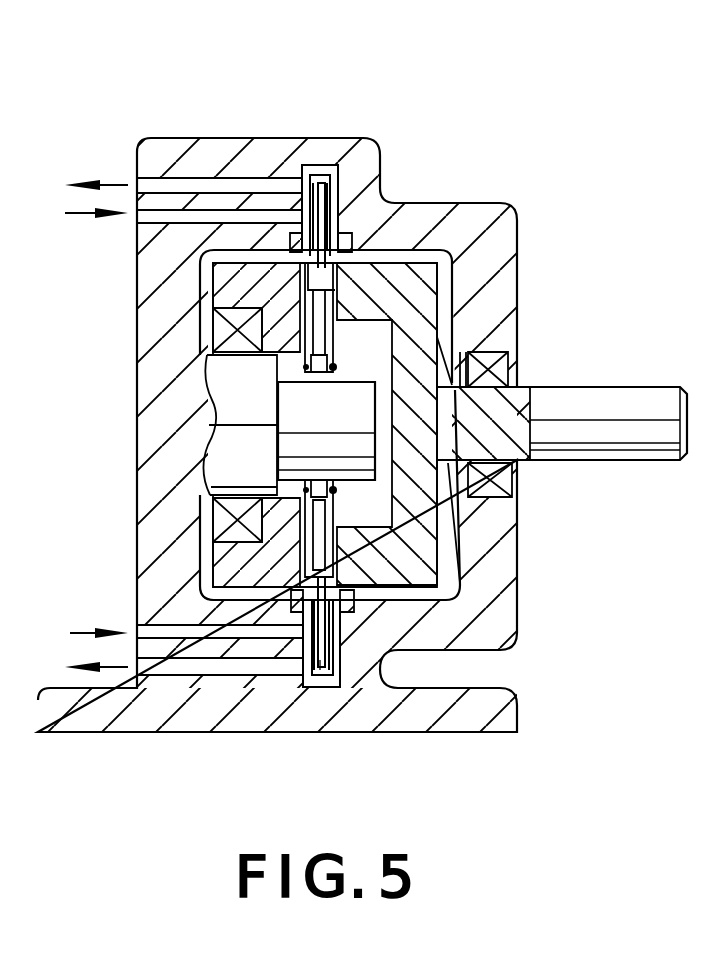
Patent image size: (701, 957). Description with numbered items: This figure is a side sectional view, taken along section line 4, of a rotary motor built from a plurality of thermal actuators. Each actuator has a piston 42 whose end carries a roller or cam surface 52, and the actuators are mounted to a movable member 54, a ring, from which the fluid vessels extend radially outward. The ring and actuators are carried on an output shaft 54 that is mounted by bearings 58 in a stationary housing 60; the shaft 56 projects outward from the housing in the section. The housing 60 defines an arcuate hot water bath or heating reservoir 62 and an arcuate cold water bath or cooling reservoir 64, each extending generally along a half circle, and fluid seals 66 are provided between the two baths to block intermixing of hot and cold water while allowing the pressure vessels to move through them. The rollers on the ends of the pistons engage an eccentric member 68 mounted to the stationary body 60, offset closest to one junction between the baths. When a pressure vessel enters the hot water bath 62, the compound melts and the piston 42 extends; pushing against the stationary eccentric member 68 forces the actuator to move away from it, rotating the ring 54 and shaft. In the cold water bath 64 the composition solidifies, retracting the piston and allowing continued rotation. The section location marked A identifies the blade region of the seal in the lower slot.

The section line 4- 4 is at (335, 792).
The piston 42 is at (318, 328).
The roller or cam surface 52 is at (319, 384).
The movable member (ring) / output shaft 54 is at (433, 543).
The shaft 56 is at (588, 406).
The bearings 58 is at (216, 522).
The stationary housing 60 is at (518, 600).
The hot water bath or heating reservoir 62 is at (303, 172).
The cold water bath or cooling reservoir 64 is at (300, 690).
The fluid seals 66 is at (295, 592).
The eccentric member 68 is at (224, 399).
The blade location A is at (333, 663).